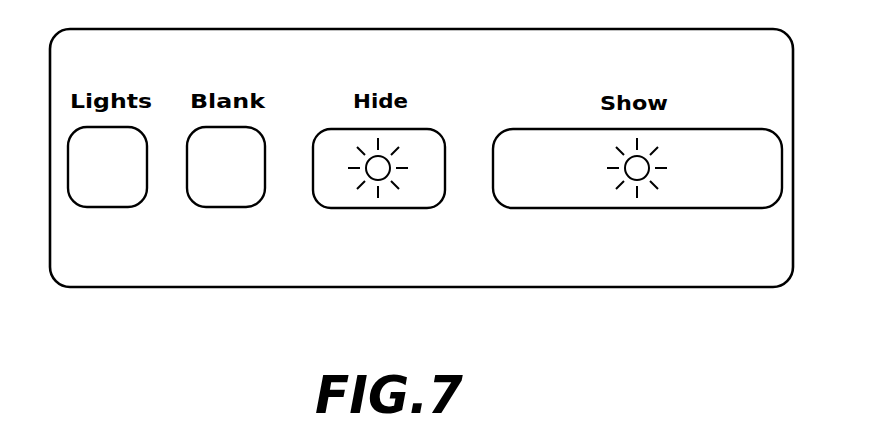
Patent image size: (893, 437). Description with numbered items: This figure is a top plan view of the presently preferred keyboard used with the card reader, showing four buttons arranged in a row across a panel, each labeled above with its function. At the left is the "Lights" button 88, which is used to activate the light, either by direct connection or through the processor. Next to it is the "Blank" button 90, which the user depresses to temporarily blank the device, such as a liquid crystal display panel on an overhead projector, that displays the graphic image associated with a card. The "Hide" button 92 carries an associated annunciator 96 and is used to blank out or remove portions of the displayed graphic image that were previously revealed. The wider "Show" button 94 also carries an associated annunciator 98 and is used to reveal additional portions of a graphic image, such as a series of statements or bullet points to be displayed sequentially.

The "Lights" button 88 is at (98, 207).
The "Blank" button 90 is at (213, 207).
The "Hide" button 92 is at (333, 208).
The "Show" button 94 is at (543, 208).
The annunciator 96 is at (383, 178).
The annunciator 98 is at (643, 178).